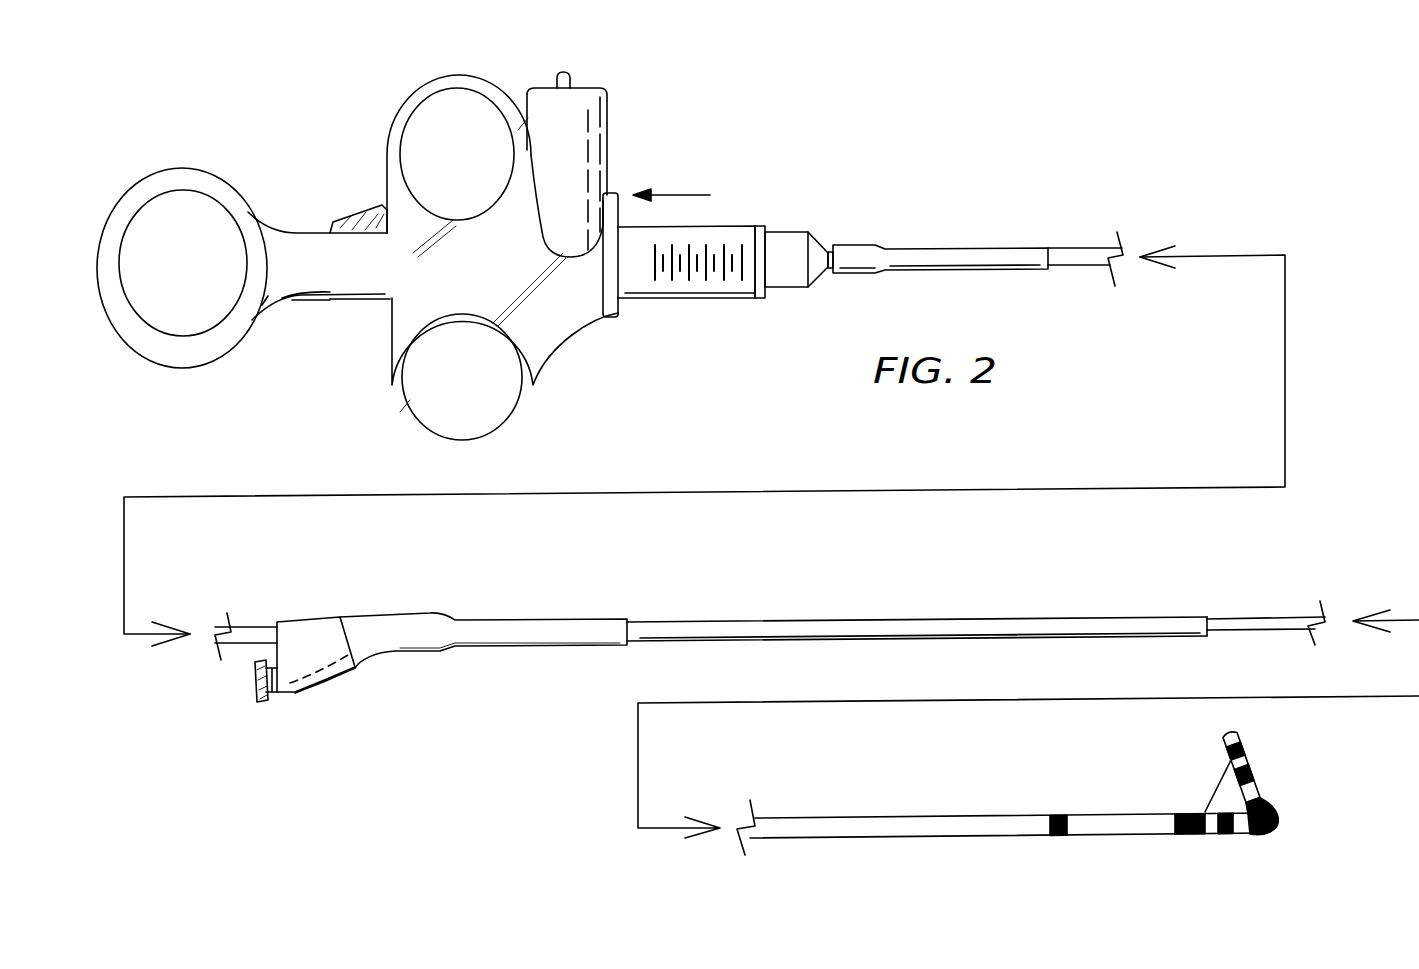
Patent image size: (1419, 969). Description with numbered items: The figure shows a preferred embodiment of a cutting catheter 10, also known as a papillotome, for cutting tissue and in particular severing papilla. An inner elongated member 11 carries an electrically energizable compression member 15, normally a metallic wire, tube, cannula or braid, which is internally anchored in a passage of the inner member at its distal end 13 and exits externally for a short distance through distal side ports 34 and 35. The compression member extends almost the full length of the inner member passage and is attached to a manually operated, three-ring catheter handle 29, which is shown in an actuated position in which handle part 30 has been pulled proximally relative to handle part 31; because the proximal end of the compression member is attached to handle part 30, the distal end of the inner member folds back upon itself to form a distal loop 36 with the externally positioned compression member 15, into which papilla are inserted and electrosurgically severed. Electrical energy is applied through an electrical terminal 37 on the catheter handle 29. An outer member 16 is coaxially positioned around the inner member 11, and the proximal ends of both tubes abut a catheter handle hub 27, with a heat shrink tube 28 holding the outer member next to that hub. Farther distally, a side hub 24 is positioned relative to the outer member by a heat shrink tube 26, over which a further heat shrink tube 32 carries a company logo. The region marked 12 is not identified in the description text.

The cutting catheter 10 is at (1090, 145).
The inner elongated member 11 is at (1235, 618).
The catheter assembly junction 12 is at (838, 228).
The distal end 13 is at (1265, 837).
The compression member 15 is at (1220, 782).
The outer member 16 is at (1070, 250).
The side hub 24 is at (272, 697).
The heat shrink tube 26 is at (335, 620).
The catheter handle hub 27 is at (765, 230).
The heat shrink tube 28 is at (878, 244).
The catheter handle 29 is at (336, 188).
The handle part 30 is at (553, 340).
The handle part 31 is at (367, 290).
The heat shrink tube 32 is at (455, 620).
The distal side port 34 is at (1232, 760).
The distal side port 35 is at (1205, 812).
The distal loop 36 is at (1237, 798).
The electrical terminal 37 is at (570, 74).